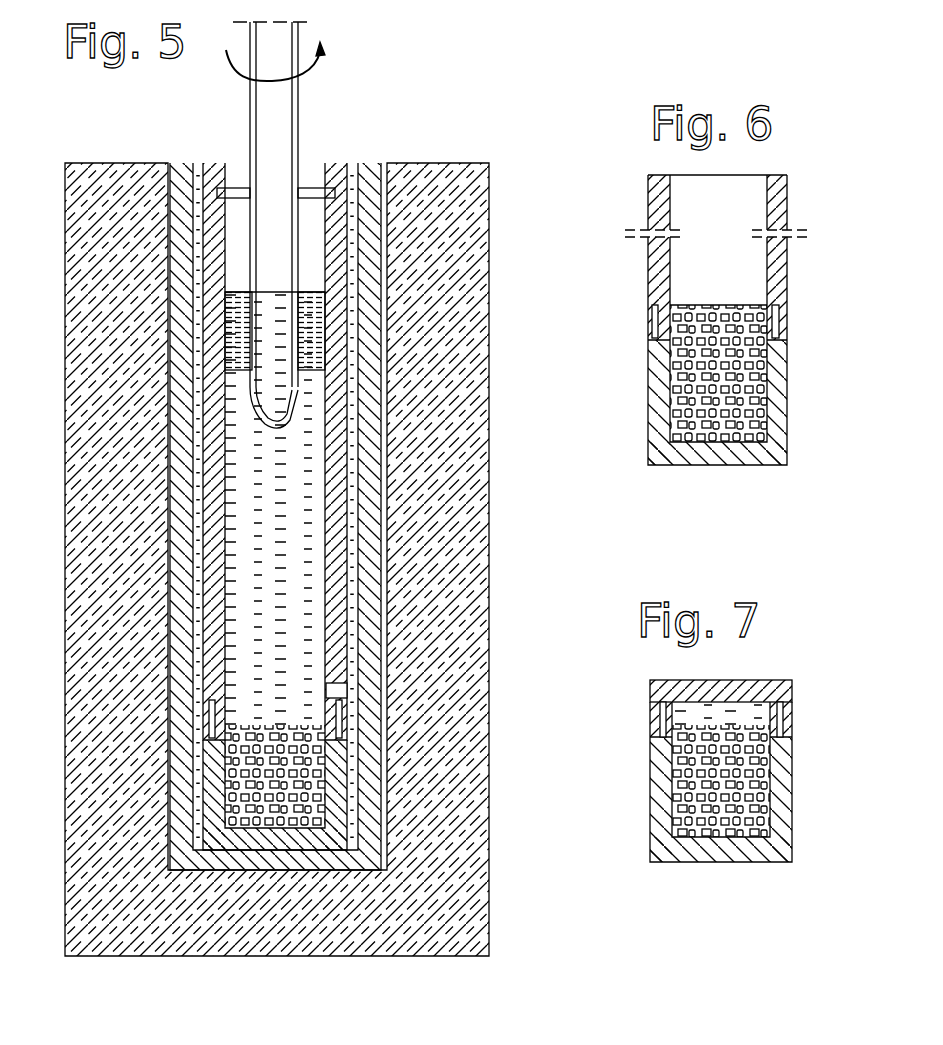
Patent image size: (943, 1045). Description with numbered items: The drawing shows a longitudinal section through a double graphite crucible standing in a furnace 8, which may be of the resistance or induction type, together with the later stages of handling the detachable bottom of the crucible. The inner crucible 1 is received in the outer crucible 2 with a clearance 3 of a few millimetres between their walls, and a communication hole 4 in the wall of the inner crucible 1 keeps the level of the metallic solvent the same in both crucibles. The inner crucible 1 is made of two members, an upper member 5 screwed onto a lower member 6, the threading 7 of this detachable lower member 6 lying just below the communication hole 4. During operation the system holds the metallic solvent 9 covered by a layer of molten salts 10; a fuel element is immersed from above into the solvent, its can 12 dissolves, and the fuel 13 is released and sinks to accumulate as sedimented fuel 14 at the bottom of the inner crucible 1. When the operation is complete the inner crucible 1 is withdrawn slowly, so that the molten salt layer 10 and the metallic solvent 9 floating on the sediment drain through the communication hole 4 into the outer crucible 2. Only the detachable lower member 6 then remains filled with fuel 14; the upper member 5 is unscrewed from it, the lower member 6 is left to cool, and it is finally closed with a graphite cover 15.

In FIG. 5, the inner crucible 1 is at (285, 506).
In FIG. 5, the outer crucible 2 is at (370, 415).
In FIG. 5, the clearance 3 is at (352, 460).
In FIG. 5, the communication hole 4 is at (340, 690).
In FIG. 6, the communication hole 4 is at (782, 296).
In FIG. 5, the upper member 5 is at (205, 683).
In FIG. 6, the upper member 5 is at (782, 258).
In FIG. 5, the lower member 6 is at (215, 750).
In FIG. 6, the lower member 6 is at (782, 392).
In FIG. 7, the lower member 6 is at (783, 808).
In FIG. 5, the threading 7 is at (340, 720).
In FIG. 6, the threading 7 is at (785, 322).
In FIG. 7, the threading 7 is at (786, 718).
In FIG. 5, the furnace 8 is at (357, 923).
In FIG. 5, the metallic solvent 9 is at (290, 578).
In FIG. 5, the layer of molten salts 10 is at (330, 338).
In FIG. 5, the can 12 is at (289, 252).
In FIG. 5, the fuel 13 is at (312, 378).
In FIG. 5, the fuel at bottom of inner crucible 14 is at (368, 786).
In FIG. 6, the fuel at bottom of inner crucible 14 is at (760, 438).
In FIG. 7, the fuel at bottom of inner crucible 14 is at (752, 822).
In FIG. 7, the graphite cover 15 is at (794, 688).